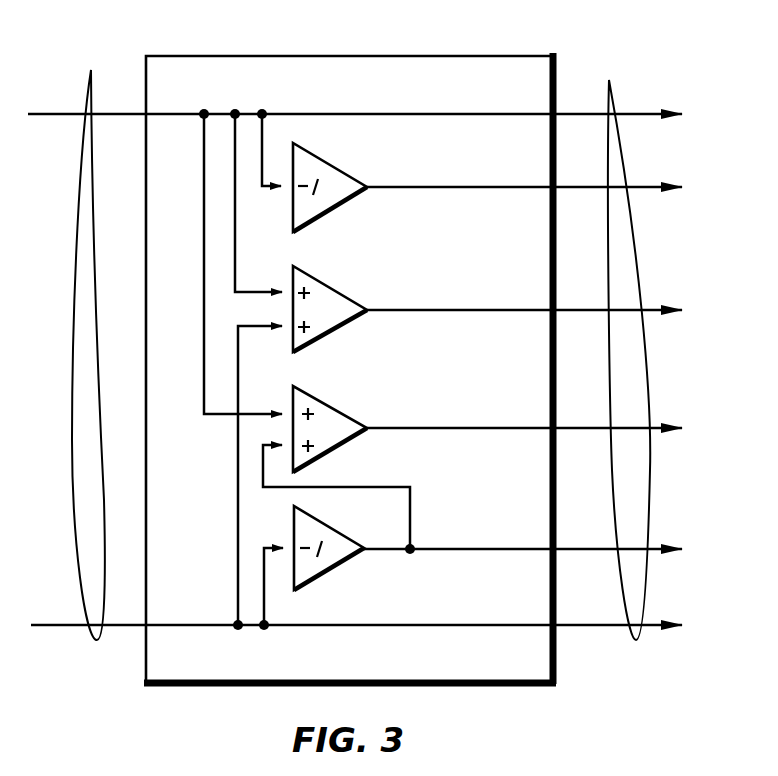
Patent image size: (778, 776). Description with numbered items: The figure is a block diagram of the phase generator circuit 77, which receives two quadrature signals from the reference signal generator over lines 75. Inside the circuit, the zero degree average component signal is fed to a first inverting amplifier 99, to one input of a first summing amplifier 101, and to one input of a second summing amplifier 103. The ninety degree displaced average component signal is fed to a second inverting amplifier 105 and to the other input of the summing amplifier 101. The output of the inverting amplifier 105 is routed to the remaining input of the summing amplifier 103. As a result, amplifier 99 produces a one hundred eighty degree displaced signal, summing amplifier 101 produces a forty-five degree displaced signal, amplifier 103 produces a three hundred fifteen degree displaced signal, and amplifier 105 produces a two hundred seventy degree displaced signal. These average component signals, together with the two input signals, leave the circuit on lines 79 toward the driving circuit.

The phase generator circuit 77 is at (366, 55).
The lines 75 is at (88, 342).
The lines 79 is at (626, 342).
The first inverting amplifier 99 is at (345, 172).
The first summing amplifier 101 is at (342, 296).
The second summing amplifier 103 is at (325, 401).
The second inverting amplifier 105 is at (325, 517).